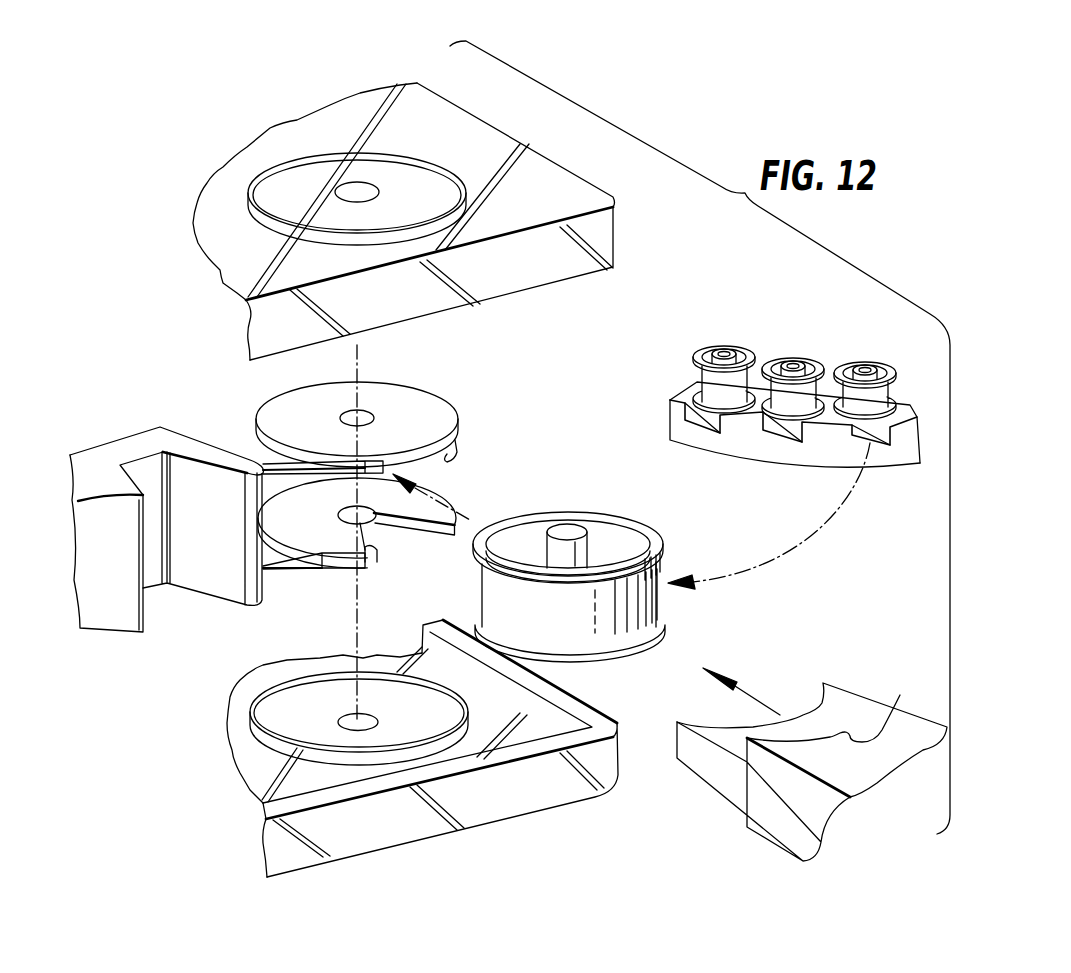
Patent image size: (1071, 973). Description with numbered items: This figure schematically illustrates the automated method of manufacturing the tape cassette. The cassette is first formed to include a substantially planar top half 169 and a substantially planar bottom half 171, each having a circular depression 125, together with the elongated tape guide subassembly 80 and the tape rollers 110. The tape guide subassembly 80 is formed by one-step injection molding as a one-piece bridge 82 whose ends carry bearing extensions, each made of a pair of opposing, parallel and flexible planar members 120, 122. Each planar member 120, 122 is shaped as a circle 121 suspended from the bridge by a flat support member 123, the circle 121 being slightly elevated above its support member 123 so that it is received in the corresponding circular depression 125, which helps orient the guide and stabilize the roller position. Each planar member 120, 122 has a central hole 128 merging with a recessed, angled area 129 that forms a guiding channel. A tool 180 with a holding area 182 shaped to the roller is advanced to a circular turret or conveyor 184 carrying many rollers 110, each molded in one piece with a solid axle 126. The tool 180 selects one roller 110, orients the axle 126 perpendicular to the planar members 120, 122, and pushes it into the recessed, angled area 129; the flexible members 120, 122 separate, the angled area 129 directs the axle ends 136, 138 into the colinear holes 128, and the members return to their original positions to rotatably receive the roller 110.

The tape guide subassembly 80 is at (226, 529).
The bridge 82 is at (110, 612).
The roller 110 is at (684, 503).
The planar member 120 is at (490, 382).
The circle 121 is at (290, 407).
The planar member 122 is at (490, 488).
The support member 123 is at (227, 437).
The circular depression 125 is at (410, 187).
The axle 126 is at (577, 555).
The hole 128 is at (367, 416).
The recessed, angled area 129 is at (452, 461).
The axle end 136 is at (588, 658).
The axle end 138 is at (572, 530).
The top half 169 is at (613, 240).
The bottom half 171 is at (473, 813).
The tool 180 is at (812, 773).
The holding area 182 is at (843, 703).
The circular turret or conveyor 184 is at (802, 453).